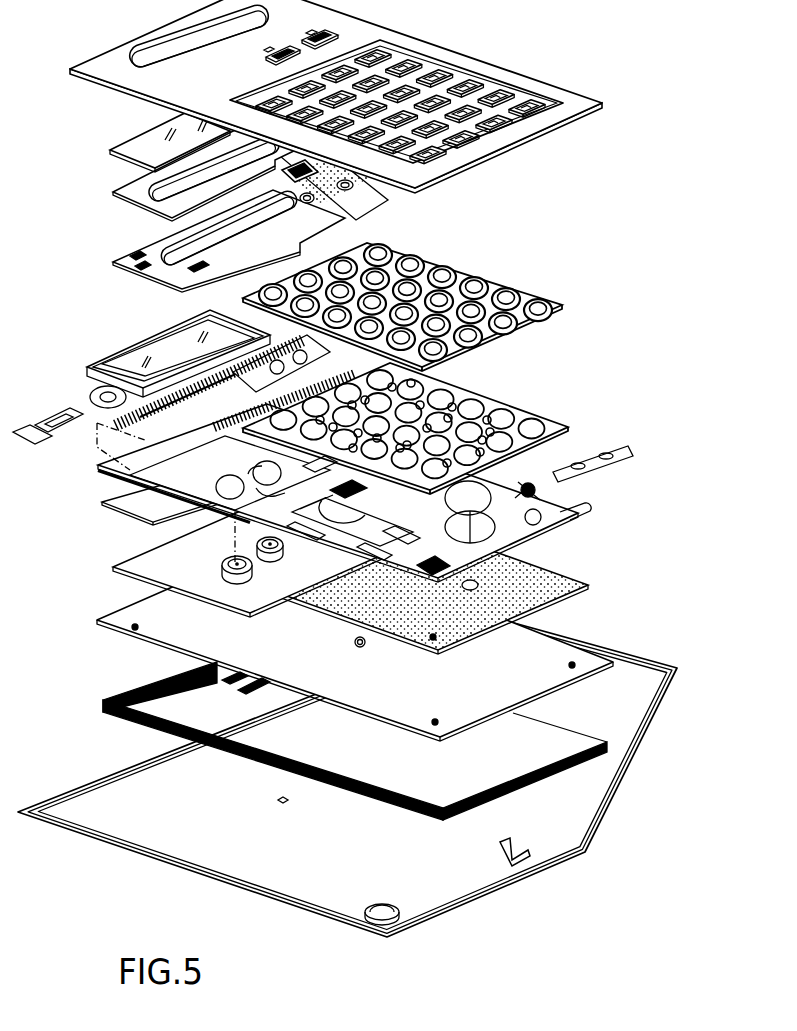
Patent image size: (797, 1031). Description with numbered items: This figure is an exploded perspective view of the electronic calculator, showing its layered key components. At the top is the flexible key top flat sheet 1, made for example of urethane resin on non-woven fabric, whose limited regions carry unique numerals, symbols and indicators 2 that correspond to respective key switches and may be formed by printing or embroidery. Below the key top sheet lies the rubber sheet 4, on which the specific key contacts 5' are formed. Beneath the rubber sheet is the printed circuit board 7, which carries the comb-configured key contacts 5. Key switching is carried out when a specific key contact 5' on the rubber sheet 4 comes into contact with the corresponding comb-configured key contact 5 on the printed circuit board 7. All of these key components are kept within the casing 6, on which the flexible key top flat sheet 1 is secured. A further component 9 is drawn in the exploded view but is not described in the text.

The flexible key top flat sheet 1 is at (97, 83).
The numerals, symbols and indicators 2 is at (445, 72).
The window plate 9 is at (120, 158).
The rubber sheet 4 is at (565, 302).
The comb-configured key contact 5 is at (457, 379).
The key contact 5' is at (515, 331).
The printed circuit board 7 is at (500, 402).
The casing 6 is at (593, 653).